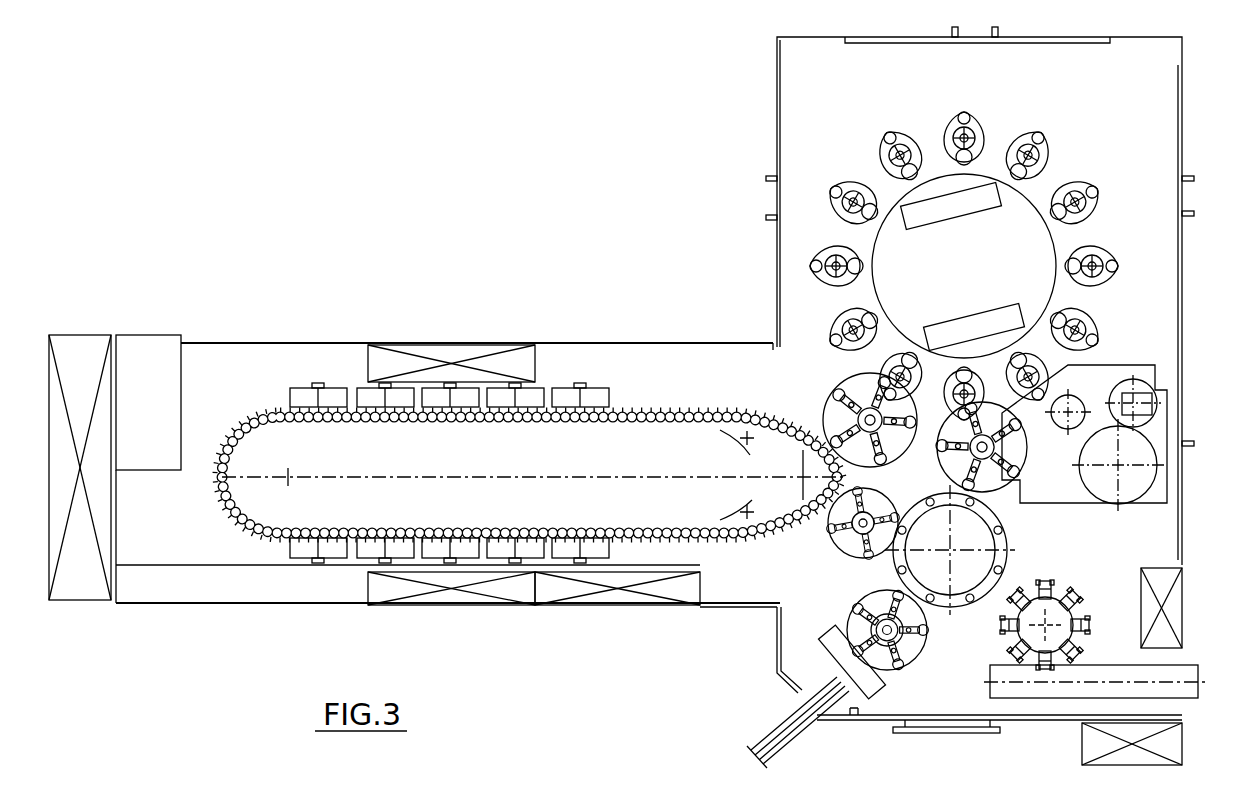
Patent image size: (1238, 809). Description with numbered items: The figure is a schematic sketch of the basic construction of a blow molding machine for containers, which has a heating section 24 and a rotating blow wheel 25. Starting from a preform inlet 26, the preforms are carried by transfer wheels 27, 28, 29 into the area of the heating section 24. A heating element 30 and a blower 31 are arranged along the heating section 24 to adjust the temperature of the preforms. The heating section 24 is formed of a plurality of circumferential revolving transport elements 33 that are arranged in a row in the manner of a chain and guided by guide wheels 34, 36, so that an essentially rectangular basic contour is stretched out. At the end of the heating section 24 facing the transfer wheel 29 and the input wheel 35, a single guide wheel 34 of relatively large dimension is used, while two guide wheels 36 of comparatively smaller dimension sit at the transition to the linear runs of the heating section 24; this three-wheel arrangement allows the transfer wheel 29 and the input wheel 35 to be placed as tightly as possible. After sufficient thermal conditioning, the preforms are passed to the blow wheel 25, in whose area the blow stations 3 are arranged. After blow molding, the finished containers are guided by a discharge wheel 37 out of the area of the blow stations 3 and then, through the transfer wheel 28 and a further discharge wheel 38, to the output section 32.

The blow station 3 is at (820, 243).
The heating section 24 is at (570, 375).
The blow wheel 25 is at (900, 196).
The preform inlet 26 is at (806, 710).
The transfer wheel 27 is at (900, 667).
The transfer wheel 28 is at (950, 613).
The transfer wheel 29 is at (838, 555).
The heating element 30 is at (337, 395).
The blower 31 is at (445, 353).
The output section 32 is at (1186, 690).
The transport element 33 is at (258, 528).
The guide wheel 34 is at (288, 474).
The input wheel 35 is at (860, 378).
The guide wheel 36 is at (747, 440).
The discharge wheel 37 is at (1022, 485).
The discharge wheel 38 is at (1053, 637).